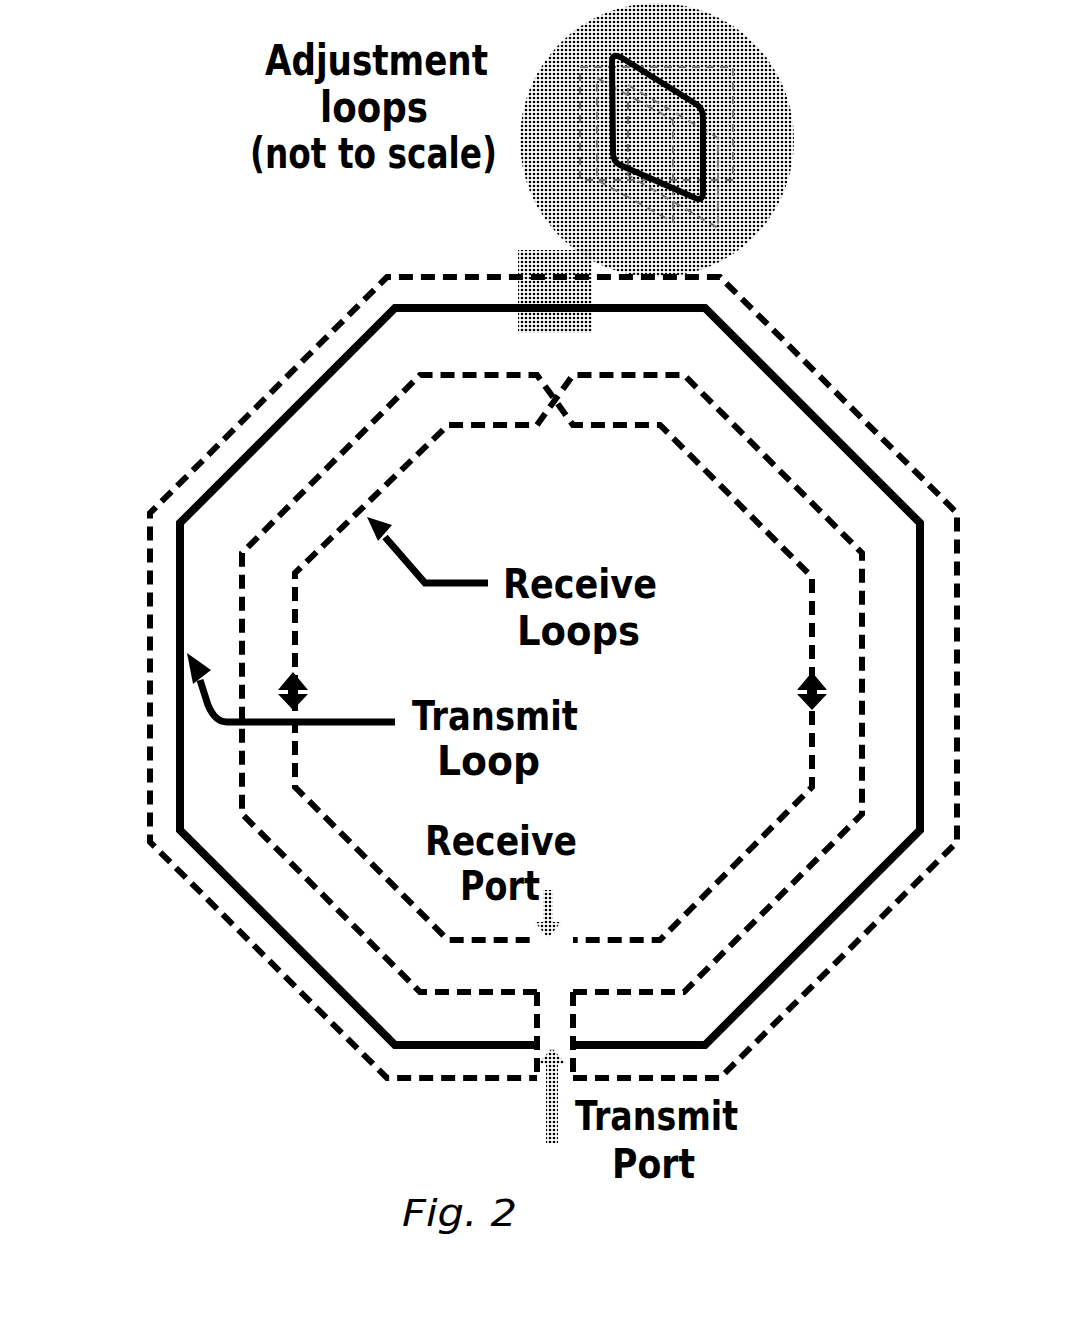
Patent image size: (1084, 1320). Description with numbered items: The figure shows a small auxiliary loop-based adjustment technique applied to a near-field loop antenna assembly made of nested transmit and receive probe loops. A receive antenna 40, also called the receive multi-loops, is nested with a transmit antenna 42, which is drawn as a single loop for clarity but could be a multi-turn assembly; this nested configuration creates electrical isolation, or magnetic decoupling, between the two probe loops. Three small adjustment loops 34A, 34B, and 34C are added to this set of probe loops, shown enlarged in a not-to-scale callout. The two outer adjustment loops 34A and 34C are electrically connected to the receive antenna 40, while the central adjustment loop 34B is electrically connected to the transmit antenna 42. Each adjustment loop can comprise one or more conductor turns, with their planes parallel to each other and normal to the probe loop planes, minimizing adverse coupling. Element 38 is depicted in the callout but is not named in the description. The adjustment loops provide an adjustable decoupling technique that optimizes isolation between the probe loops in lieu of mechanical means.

The adjustment loop 34A is at (627, 173).
The adjustment loop 34B is at (680, 163).
The adjustment loop 34C is at (730, 147).
The adjustment loop conductor 38 is at (722, 166).
The receive antenna 40 is at (410, 465).
The transmit antenna 42 is at (187, 590).